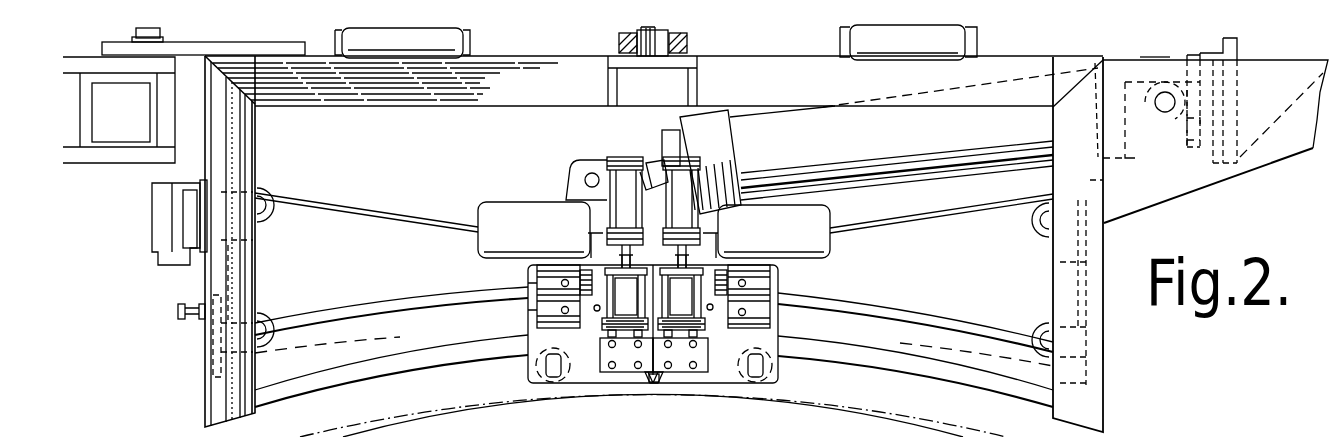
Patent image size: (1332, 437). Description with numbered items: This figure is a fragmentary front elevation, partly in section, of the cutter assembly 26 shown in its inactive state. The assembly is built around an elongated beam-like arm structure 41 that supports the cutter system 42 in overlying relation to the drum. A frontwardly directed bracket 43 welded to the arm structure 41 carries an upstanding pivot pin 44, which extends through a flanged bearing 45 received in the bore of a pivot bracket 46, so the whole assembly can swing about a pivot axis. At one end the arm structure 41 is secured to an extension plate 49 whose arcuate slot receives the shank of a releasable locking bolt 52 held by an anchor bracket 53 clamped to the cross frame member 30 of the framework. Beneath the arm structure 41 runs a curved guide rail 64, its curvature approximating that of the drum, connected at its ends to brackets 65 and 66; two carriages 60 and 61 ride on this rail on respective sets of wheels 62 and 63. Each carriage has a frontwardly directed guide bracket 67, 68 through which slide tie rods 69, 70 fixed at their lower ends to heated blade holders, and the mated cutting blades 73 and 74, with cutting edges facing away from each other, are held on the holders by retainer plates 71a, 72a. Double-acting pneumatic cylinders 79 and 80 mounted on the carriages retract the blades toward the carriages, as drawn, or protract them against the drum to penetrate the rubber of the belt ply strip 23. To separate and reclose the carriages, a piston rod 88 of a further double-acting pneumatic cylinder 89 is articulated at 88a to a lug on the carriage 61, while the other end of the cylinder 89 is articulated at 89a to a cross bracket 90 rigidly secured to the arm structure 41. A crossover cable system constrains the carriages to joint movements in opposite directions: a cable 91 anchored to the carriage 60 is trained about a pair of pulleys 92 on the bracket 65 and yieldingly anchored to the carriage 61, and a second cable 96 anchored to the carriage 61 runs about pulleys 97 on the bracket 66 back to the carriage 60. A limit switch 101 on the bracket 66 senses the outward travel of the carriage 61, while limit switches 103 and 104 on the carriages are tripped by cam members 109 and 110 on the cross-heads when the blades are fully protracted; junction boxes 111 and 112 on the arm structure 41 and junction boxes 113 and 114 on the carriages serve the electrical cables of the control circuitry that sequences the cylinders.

The belt ply strip 23 is at (465, 412).
The cutter assembly 26 is at (1155, 52).
The cross frame member 30 is at (93, 122).
The arm structure 41 is at (1300, 67).
The cutter system 42 is at (1131, 352).
The bracket 43 is at (628, 63).
The pivot pin 44 is at (650, 32).
The flanged bearing 45 is at (668, 30).
The pivot bracket 46 is at (690, 46).
The extension plate 49 is at (203, 33).
The locking bolt 52 is at (161, 32).
The anchor bracket 53 is at (85, 162).
The carriage 60 is at (779, 320).
The carriage 61 is at (540, 316).
The wheels 62 is at (779, 388).
The wheels 63 is at (542, 383).
The guide rail 64 is at (947, 322).
The bracket 65 is at (1092, 407).
The bracket 66 is at (248, 146).
The guide bracket 67 is at (705, 331).
The guide bracket 68 is at (604, 331).
The tie rods 69 is at (681, 286).
The tie rods 70 is at (626, 286).
The retainer plate 71a is at (680, 358).
The retainer plate 72a is at (603, 360).
The cutting blade 73 is at (663, 376).
The cutting blade 74 is at (645, 373).
The pneumatic cylinder 79 is at (692, 162).
The pneumatic cylinder 80 is at (614, 158).
The piston rod 88 is at (652, 153).
The articulation 88a is at (591, 173).
The pneumatic cylinder 89 is at (866, 178).
The articulation 89a is at (1163, 113).
The cross bracket 90 is at (1237, 48).
The cable 91 is at (962, 210).
The pulleys 92 is at (1040, 322).
The cable 96 is at (397, 216).
The pulleys 97 is at (263, 318).
The limit switch 101 is at (157, 237).
The limit switch 103 is at (782, 290).
The limit switch 104 is at (548, 282).
The cam member 109 is at (720, 268).
The cam member 110 is at (592, 268).
The junction box 111 is at (963, 38).
The junction box 112 is at (455, 40).
The junction box 113 is at (812, 247).
The junction box 114 is at (490, 205).